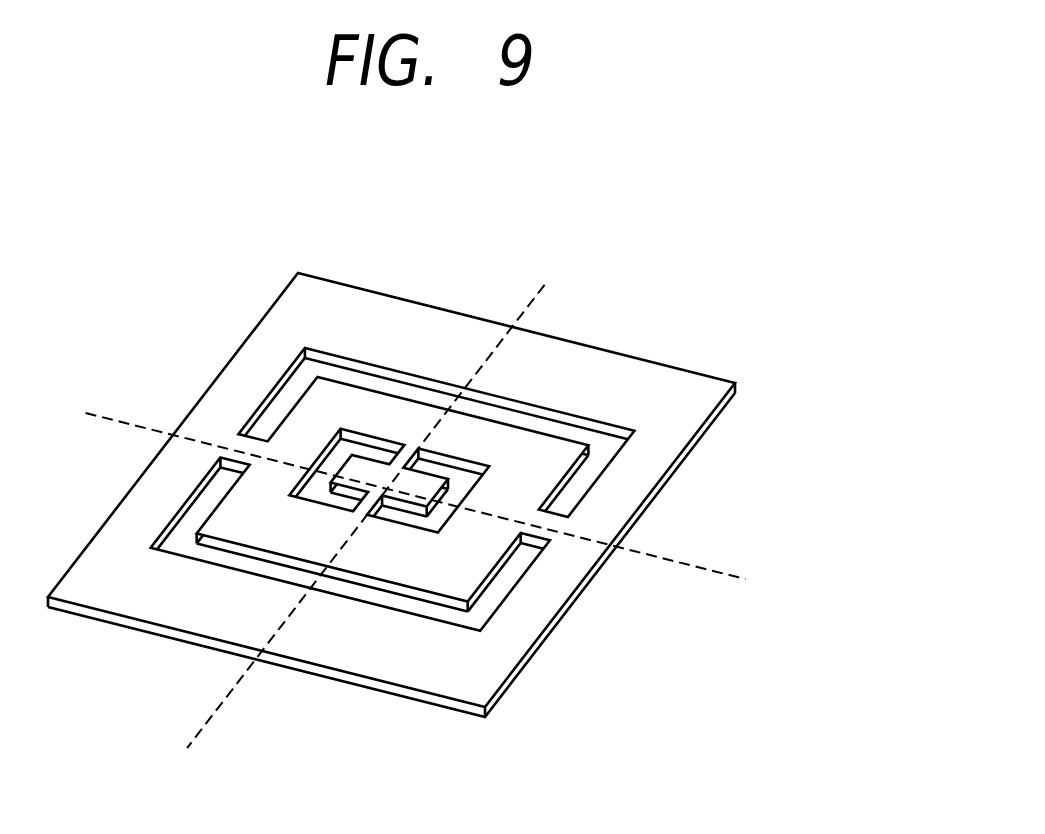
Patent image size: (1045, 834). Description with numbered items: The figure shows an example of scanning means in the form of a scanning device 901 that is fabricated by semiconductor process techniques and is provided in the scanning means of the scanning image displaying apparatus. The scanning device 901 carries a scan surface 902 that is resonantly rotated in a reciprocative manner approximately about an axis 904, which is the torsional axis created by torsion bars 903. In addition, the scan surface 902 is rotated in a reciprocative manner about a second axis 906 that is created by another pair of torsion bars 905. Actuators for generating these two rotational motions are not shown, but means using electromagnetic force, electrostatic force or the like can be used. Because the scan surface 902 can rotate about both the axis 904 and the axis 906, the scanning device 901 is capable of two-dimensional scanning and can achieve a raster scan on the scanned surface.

The scanning device 901 is at (600, 370).
The scan surface 902 is at (353, 468).
The torsion bars 903 is at (377, 513).
The axis 904 is at (513, 322).
The torsion bars 905 is at (547, 517).
The axis 906 is at (705, 562).